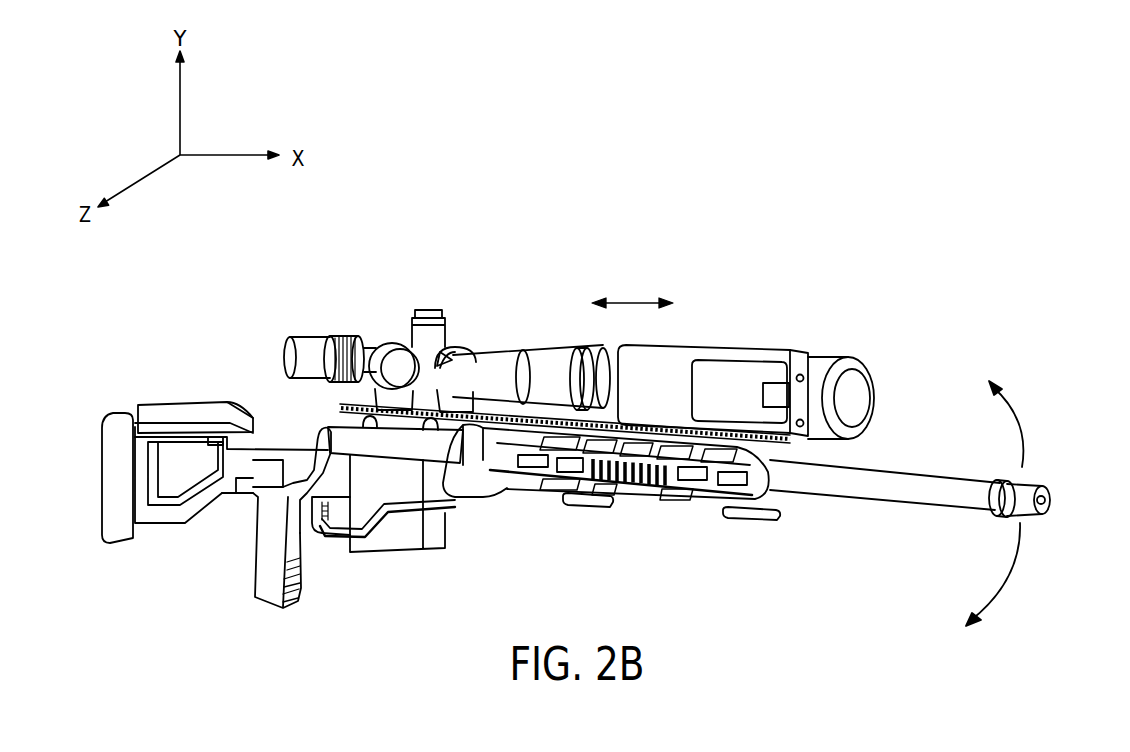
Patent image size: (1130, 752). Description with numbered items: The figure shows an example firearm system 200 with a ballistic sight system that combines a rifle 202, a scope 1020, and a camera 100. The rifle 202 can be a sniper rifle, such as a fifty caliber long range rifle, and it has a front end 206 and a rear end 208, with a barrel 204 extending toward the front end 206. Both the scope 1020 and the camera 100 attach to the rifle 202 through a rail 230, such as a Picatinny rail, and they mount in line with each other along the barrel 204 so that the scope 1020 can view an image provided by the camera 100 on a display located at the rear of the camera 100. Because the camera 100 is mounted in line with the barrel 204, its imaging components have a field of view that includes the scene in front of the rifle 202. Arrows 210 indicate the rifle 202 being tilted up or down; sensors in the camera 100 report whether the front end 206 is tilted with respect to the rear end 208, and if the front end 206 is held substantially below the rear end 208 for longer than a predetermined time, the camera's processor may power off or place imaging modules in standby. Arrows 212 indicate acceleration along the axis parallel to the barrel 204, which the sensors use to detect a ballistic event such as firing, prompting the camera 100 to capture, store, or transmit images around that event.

The firearm system 200 is at (636, 142).
The arrows indicating acceleration direction 212 is at (634, 302).
The rail 230 is at (503, 413).
The scope 1020 is at (517, 353).
The camera 100 is at (778, 352).
The rifle 202 is at (352, 438).
The rear end 208 is at (100, 478).
The barrel 204 is at (868, 492).
The front end 206 is at (1050, 503).
The arrows indicating tilt 210 is at (1017, 430).